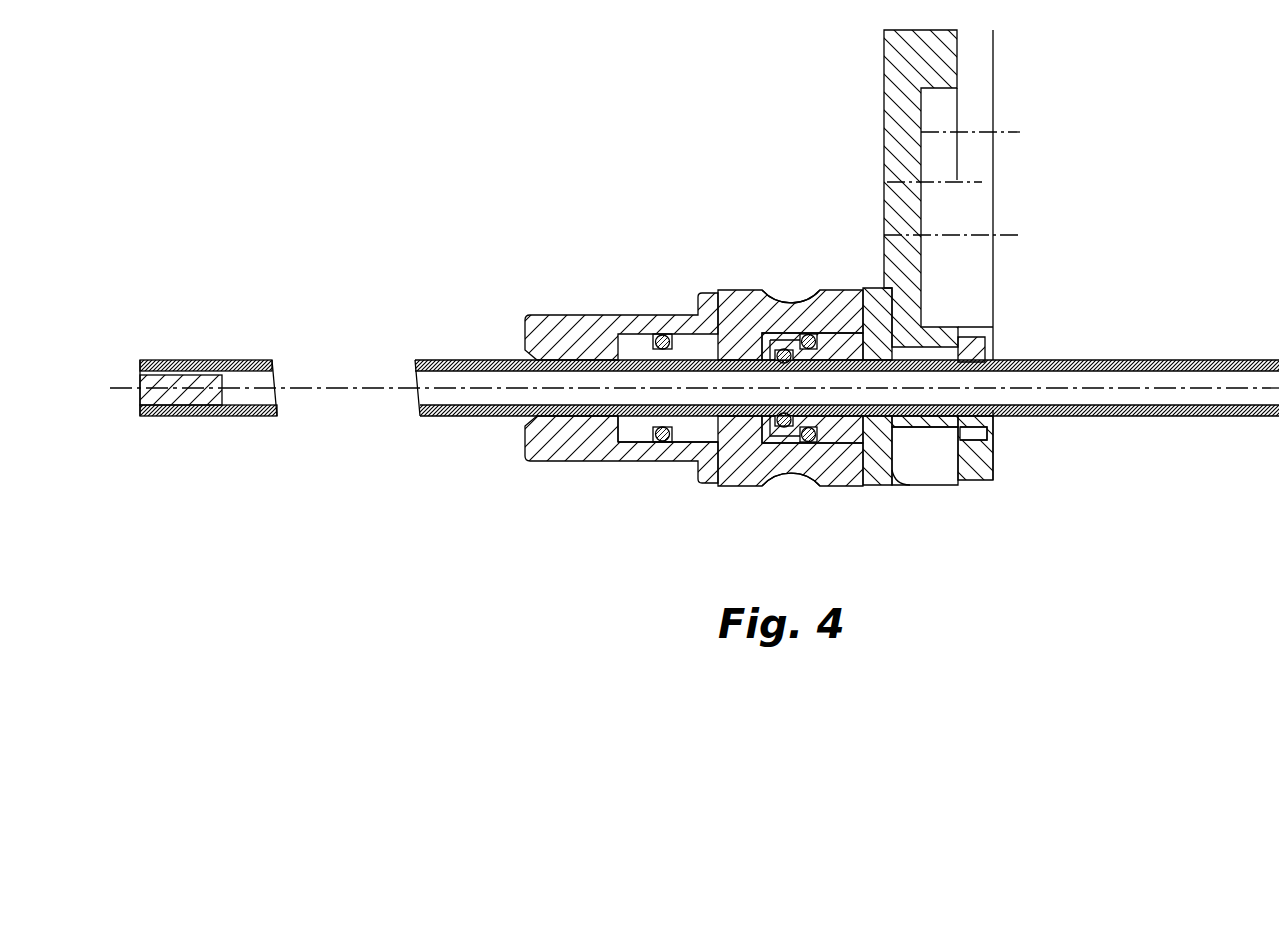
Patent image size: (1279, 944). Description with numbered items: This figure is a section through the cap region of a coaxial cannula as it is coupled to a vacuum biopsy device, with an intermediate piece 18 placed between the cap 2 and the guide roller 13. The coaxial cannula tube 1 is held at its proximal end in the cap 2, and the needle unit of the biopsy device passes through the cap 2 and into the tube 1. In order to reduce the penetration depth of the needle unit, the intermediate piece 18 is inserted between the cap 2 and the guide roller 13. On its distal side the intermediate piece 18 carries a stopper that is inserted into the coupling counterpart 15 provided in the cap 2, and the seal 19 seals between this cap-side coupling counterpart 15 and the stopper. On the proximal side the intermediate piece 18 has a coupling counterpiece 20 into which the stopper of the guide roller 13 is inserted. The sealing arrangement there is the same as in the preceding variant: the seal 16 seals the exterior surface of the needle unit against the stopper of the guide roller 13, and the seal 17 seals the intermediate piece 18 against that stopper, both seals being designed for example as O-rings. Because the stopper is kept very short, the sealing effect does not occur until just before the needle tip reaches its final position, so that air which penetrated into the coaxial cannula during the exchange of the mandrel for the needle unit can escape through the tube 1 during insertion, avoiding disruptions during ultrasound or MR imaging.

The coaxial cannula tube 1 is at (447, 358).
The cap 2 is at (577, 330).
The guide roller 13 is at (990, 352).
The coupling counterpart 15 is at (679, 455).
The seal 16 is at (786, 428).
The seal 17 is at (808, 443).
The intermediate piece 18 is at (748, 290).
The seal 19 is at (661, 445).
The coupling counterpiece 20 is at (835, 300).